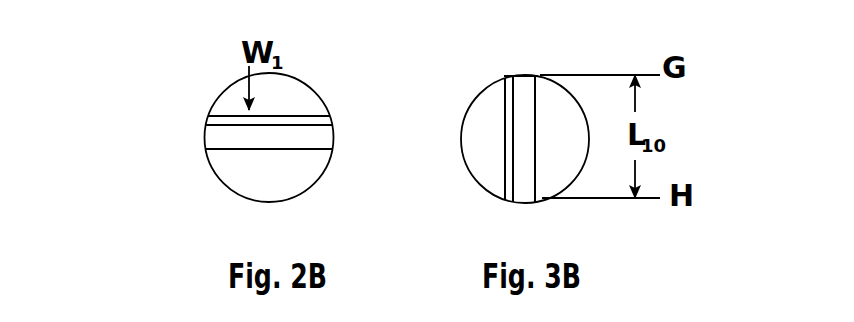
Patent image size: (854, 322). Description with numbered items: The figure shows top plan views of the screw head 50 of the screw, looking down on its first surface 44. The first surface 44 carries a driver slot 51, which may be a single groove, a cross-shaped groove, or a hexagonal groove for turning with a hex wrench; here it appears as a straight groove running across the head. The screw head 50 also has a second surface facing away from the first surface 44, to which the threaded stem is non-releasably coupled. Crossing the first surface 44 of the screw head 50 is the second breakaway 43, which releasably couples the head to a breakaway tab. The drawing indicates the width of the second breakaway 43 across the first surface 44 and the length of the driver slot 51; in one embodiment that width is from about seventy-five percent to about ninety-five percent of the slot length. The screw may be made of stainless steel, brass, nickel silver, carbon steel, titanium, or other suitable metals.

In FIG. 2B, the screw head 50 is at (163, 98).
In FIG. 3B, the screw head 50 is at (452, 147).
In FIG. 2B, the driver slot 51 is at (225, 132).
In FIG. 3B, the driver slot 51 is at (527, 75).
In FIG. 2B, the first surface 44 is at (298, 90).
In FIG. 3B, the first surface 44 is at (490, 100).
In FIG. 2B, the second breakaway 43 is at (305, 121).
In FIG. 3B, the second breakaway 43 is at (512, 147).